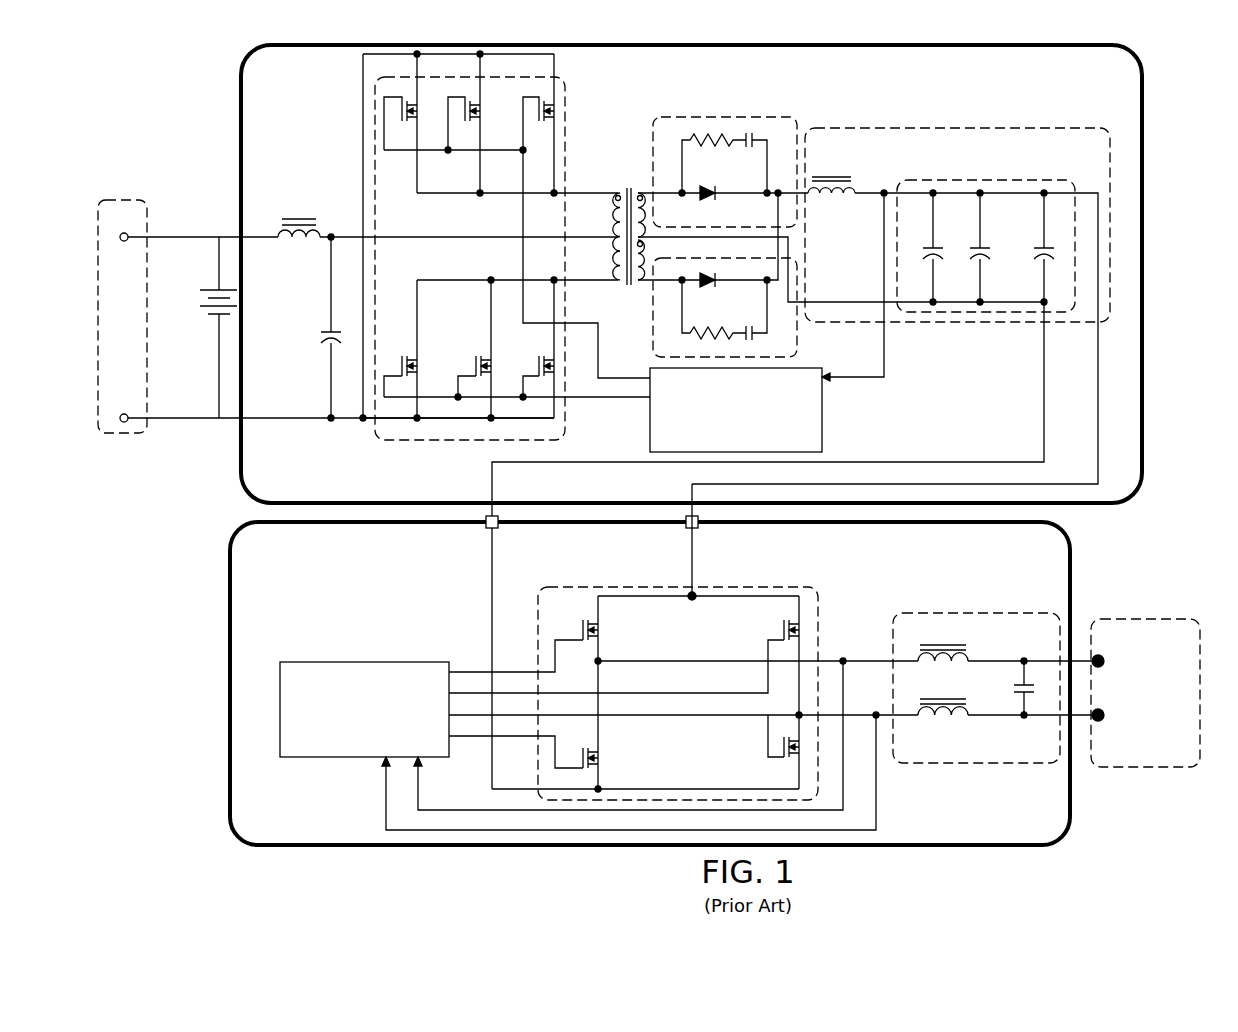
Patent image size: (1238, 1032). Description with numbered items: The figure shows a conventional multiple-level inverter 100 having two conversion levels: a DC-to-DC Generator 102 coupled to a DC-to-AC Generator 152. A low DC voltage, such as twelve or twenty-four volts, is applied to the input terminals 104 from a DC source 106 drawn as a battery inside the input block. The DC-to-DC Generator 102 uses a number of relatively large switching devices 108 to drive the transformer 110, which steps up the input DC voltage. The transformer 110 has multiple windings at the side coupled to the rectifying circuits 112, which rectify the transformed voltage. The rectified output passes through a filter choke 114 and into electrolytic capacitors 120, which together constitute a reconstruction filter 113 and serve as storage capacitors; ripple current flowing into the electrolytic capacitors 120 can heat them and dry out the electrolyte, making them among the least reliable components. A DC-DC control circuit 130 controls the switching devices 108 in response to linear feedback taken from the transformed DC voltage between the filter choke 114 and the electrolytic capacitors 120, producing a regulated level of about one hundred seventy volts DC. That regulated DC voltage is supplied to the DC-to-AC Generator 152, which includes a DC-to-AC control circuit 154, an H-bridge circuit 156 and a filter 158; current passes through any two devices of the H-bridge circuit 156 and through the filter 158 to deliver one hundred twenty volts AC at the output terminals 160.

The inverter 100 is at (146, 68).
The DC-to-DC Generator 102 is at (241, 90).
The input terminals 104 is at (128, 200).
The DC source (battery) 106 is at (215, 290).
The switching devices 108 is at (565, 125).
The transformer 110 is at (624, 185).
The rectifying circuits 112 is at (703, 117).
The reconstruction filter 113 is at (866, 128).
The filter choke 114 is at (812, 176).
The electrolytic capacitors 120 is at (1027, 180).
The DC-DC control circuit 130 is at (767, 322).
The DC-to-AC Generator 152 is at (230, 562).
The DC-to-AC control circuit 154 is at (599, 735).
The H-bridge circuit 156 is at (573, 587).
The filter 158 is at (925, 613).
The output terminals 160 is at (1123, 619).